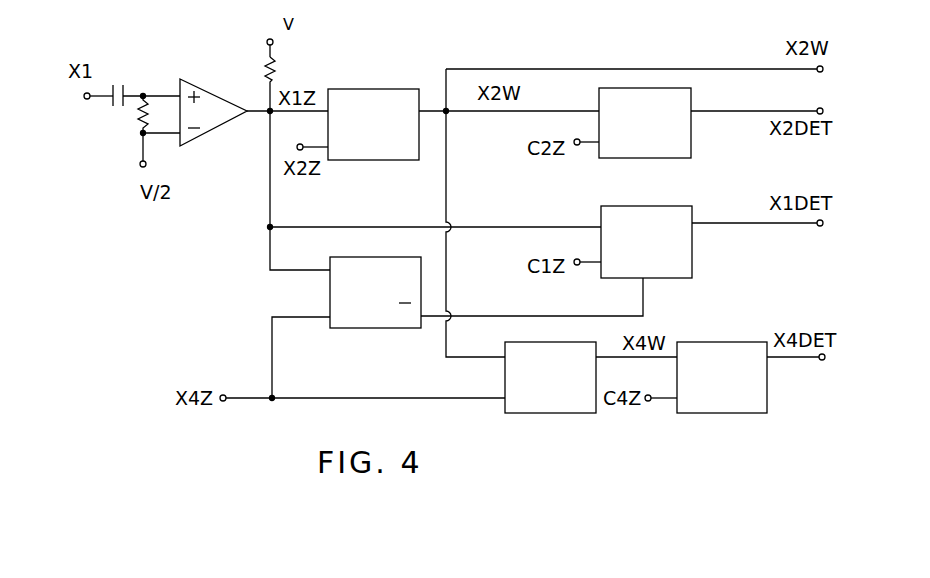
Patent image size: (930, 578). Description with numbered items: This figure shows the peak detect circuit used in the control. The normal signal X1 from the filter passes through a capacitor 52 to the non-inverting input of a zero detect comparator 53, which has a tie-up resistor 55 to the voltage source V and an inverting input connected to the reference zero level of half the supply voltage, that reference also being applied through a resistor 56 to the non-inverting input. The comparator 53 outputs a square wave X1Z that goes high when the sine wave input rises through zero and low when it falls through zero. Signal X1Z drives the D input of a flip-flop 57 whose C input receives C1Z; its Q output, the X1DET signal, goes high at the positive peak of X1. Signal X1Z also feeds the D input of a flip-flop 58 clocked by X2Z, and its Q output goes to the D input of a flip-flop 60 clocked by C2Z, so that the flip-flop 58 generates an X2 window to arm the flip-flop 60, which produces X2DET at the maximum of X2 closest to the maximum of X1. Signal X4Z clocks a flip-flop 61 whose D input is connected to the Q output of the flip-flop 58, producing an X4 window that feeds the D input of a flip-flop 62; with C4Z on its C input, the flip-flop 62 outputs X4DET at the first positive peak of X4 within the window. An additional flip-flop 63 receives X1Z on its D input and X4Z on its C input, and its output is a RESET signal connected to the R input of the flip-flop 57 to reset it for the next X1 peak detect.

The capacitor 52 is at (127, 92).
The zero detect comparator 53 is at (217, 100).
The tie-up resistor 55 is at (275, 72).
The resistor 56 is at (137, 115).
The flip-flop 57 is at (670, 205).
The flip-flop 58 is at (383, 100).
The flip-flop 60 is at (688, 118).
The flip-flop 61 is at (548, 406).
The flip-flop 62 is at (725, 406).
The flip-flop 63 is at (372, 324).